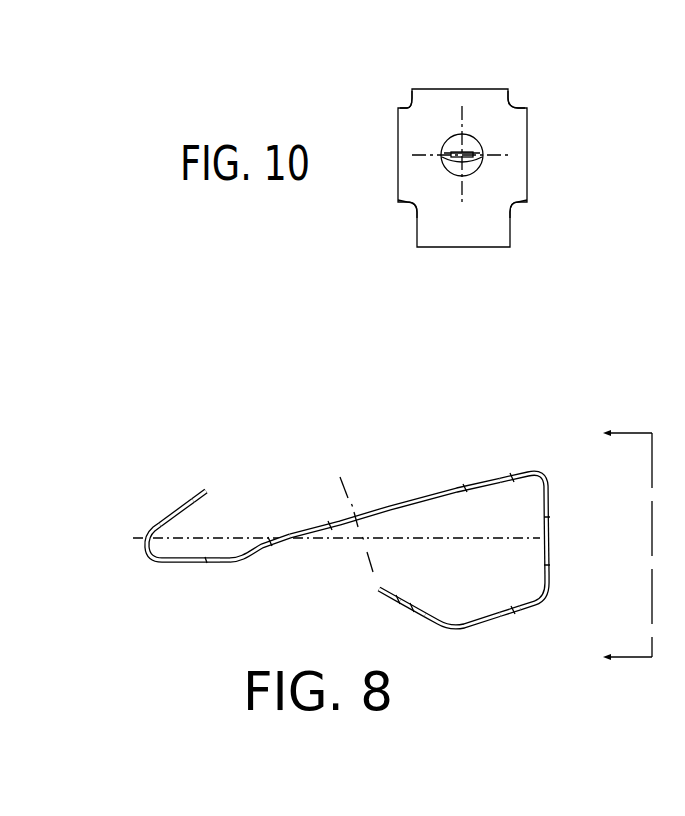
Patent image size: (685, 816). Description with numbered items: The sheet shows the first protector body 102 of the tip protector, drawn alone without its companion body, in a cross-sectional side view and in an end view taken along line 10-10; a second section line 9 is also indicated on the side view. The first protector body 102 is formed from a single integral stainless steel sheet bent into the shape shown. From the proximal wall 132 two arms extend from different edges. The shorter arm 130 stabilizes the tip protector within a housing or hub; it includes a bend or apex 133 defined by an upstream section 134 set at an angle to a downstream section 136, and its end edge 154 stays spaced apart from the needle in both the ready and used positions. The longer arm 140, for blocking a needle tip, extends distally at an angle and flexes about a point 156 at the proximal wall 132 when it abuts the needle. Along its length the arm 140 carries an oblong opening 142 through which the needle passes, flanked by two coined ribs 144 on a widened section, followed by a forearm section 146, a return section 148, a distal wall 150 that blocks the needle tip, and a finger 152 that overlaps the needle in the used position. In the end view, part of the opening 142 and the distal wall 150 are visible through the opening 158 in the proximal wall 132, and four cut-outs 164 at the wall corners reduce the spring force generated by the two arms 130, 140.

In FIG. 8, the first protector body 102 is at (222, 599).
In FIG. 10, the arm 130 is at (439, 212).
In FIG. 8, the arm 130 is at (571, 610).
In FIG. 10, the proximal wall 132 is at (429, 178).
In FIG. 8, the bend or apex 133 is at (462, 651).
In FIG. 8, the upstream section 134 is at (384, 620).
In FIG. 8, the downstream section 136 is at (531, 648).
In FIG. 8, the arm 140 is at (256, 523).
In FIG. 10, the opening 142 is at (406, 186).
In FIG. 8, the ribs 144 is at (395, 472).
In FIG. 8, the forearm section 146 is at (177, 617).
In FIG. 8, the return section 148 is at (136, 575).
In FIG. 10, the distal wall 150 is at (453, 99).
In FIG. 8, the distal wall 150 is at (146, 491).
In FIG. 8, the end section or finger 152 is at (188, 461).
In FIG. 8, the end edge 154 is at (423, 583).
In FIG. 8, the point 156 is at (515, 457).
In FIG. 10, the opening 158 is at (519, 104).
In FIG. 8, the opening 158 is at (594, 531).
In FIG. 10, the cut-outs 164 is at (475, 155).
In FIG. 8, the section line 9- 9 is at (326, 536).
In FIG. 8, the line 10- 10 is at (631, 545).